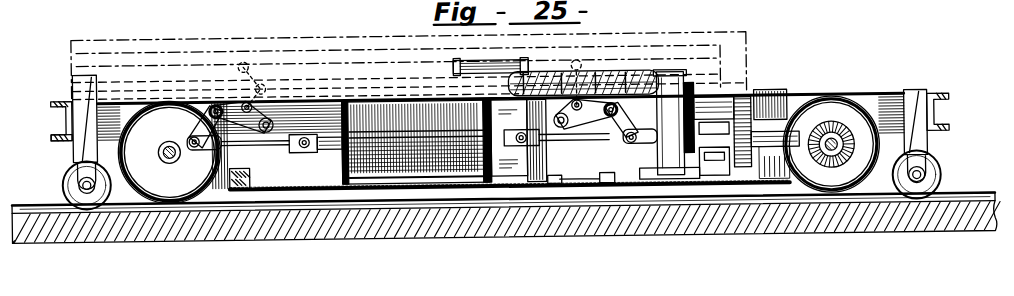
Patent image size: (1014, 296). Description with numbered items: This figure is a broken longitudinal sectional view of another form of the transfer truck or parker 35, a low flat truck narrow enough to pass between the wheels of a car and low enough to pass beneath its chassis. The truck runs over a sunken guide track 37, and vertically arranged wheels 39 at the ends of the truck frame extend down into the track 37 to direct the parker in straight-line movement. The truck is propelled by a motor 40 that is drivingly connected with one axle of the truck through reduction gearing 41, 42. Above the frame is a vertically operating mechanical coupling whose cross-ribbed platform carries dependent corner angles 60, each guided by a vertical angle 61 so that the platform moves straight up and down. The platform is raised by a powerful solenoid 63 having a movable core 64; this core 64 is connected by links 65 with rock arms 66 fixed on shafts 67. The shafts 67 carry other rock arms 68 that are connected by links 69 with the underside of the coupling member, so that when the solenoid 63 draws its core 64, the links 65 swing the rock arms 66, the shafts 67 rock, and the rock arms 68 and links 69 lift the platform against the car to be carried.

The transfer truck (parker) 35 is at (54, 110).
The sunken guide track 37 is at (965, 203).
The vertically arranged wheel 39 is at (70, 177).
The motor 40 is at (462, 60).
The reduction gearing 41 is at (738, 112).
The reduction gearing 42 is at (832, 120).
The dependent corner angle 60 is at (85, 91).
The vertical angle 61 is at (60, 134).
The solenoid 63 is at (344, 153).
The movable core 64 is at (307, 148).
The link 65 is at (255, 143).
The rock arm 66 is at (190, 134).
The shaft 67 is at (214, 103).
The rock arm 68 is at (247, 100).
The link 69 is at (268, 115).